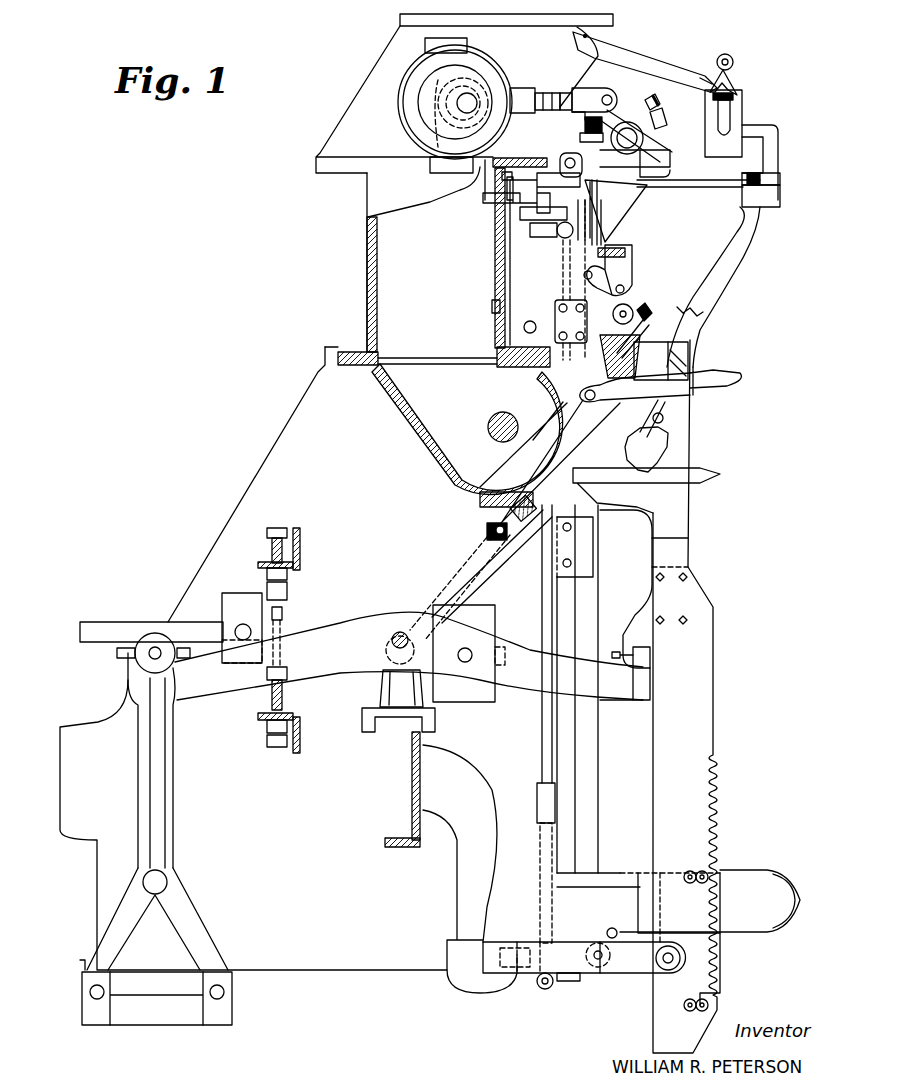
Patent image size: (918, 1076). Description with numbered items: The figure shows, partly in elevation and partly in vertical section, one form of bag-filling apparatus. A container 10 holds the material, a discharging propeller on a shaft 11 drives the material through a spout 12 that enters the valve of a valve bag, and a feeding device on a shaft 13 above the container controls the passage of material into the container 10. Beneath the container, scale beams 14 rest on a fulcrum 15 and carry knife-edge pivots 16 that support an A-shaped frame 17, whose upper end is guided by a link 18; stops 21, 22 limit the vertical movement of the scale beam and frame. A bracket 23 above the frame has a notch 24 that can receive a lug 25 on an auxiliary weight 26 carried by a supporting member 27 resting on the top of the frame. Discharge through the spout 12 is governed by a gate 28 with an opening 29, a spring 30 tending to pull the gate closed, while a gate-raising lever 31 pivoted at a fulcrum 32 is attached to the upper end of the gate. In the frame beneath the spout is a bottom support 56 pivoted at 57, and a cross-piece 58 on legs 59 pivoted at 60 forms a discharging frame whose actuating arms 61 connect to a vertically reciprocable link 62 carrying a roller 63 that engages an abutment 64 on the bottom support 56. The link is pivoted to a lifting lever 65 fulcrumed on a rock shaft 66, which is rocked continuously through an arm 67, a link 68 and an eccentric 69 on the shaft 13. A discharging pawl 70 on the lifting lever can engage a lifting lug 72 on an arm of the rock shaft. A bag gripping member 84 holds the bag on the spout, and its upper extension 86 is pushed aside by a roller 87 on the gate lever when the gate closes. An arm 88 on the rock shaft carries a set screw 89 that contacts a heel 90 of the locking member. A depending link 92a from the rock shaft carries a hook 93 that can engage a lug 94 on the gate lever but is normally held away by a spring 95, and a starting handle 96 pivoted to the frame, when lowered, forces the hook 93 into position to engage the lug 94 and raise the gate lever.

The container 10 is at (497, 270).
The shaft 11 is at (490, 430).
The spout 12 is at (678, 466).
The shaft 13 is at (469, 114).
The scale beams 14 is at (521, 677).
The fulcrum 15 is at (420, 665).
The knife-edge pivots 16 is at (646, 668).
The A-shaped frame 17 is at (686, 511).
The link 18 is at (685, 187).
The stop 21 is at (286, 680).
The stop 22 is at (290, 592).
The bracket 23 is at (660, 47).
The notch 24 is at (704, 80).
The lug 25 is at (731, 64).
The auxiliary weight 26 is at (722, 148).
The supporting member 27 is at (779, 150).
The gate 28 is at (515, 508).
The opening 29 is at (552, 476).
The spring 30 is at (496, 530).
The gate-raising lever 31 is at (652, 317).
The fulcrum 32 is at (531, 321).
The bottom support 56 is at (762, 918).
The pivot 57 is at (715, 876).
The cross-piece 58 is at (590, 551).
The legs 59 is at (580, 757).
The pivot 60 is at (664, 966).
The actuating arms 61 is at (525, 985).
The link 62 is at (540, 805).
The roller 63 is at (600, 968).
The abutment 64 is at (620, 922).
The lifting lever 65 is at (565, 156).
The rock shaft 66 is at (627, 154).
The arm 67 is at (612, 150).
The link 68 is at (550, 96).
The eccentric 69 is at (432, 78).
The discharging pawl 70 is at (583, 123).
The lifting lug 72 is at (594, 100).
The bag gripping member 84 is at (660, 447).
The upper extension 86 is at (658, 399).
The roller 87 is at (670, 357).
The arm 88 is at (666, 125).
The set screw 89 is at (652, 103).
The heel 90 is at (672, 162).
The depending link 92a is at (592, 233).
The hook 93 is at (632, 277).
The lug 94 is at (631, 310).
The spring 95 is at (627, 253).
The starting handle 96 is at (726, 380).